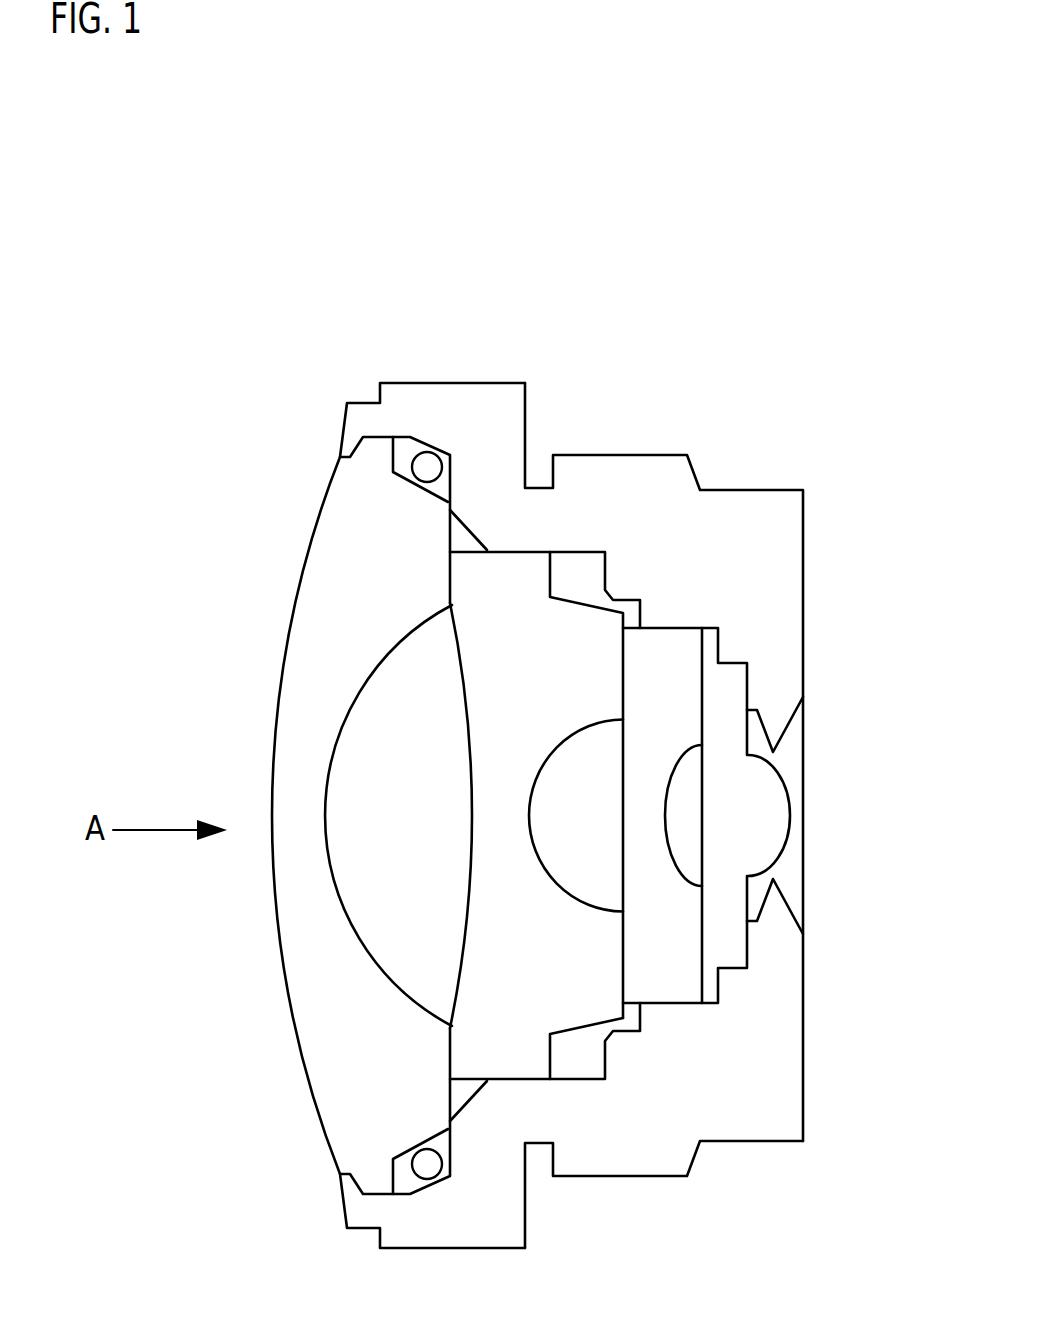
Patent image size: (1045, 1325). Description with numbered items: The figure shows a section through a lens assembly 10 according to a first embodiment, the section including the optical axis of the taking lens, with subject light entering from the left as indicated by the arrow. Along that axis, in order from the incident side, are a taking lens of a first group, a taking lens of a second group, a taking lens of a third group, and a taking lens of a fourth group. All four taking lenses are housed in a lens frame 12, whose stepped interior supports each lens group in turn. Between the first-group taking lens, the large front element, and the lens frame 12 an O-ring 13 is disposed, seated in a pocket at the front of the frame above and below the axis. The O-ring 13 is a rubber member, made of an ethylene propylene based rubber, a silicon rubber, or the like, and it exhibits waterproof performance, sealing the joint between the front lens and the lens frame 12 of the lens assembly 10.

The lens assembly 10 is at (342, 195).
The lens frame 12 is at (757, 507).
The O-ring 13 is at (430, 460).